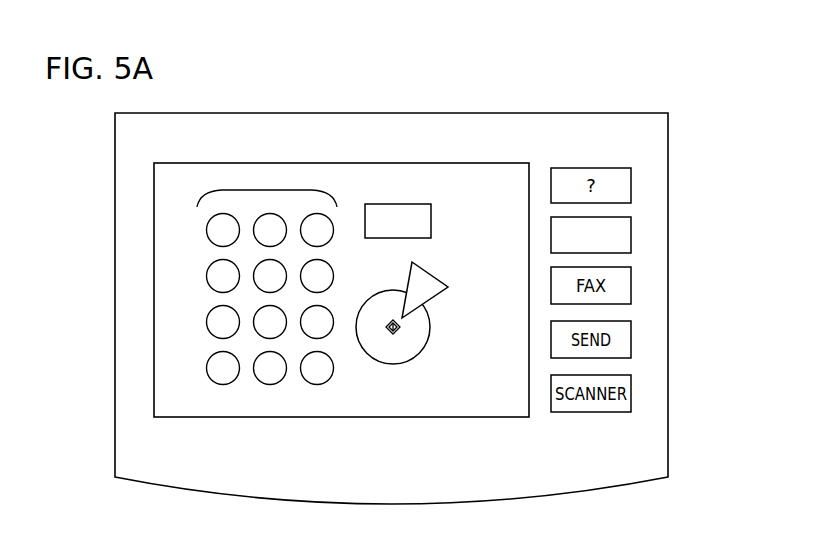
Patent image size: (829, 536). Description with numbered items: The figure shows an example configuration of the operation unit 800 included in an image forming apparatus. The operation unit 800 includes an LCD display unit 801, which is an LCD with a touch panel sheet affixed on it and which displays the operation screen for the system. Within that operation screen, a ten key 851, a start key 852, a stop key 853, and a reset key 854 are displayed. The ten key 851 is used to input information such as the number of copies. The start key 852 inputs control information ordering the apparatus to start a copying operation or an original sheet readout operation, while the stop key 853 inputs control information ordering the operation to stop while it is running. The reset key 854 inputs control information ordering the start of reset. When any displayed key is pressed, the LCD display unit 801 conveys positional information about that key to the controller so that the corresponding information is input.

The operation unit 800 is at (668, 157).
The LCD display unit 801 is at (262, 417).
The ten key 851 is at (267, 190).
The start key 852 is at (383, 363).
The stop key 853 is at (432, 290).
The reset key 854 is at (431, 222).